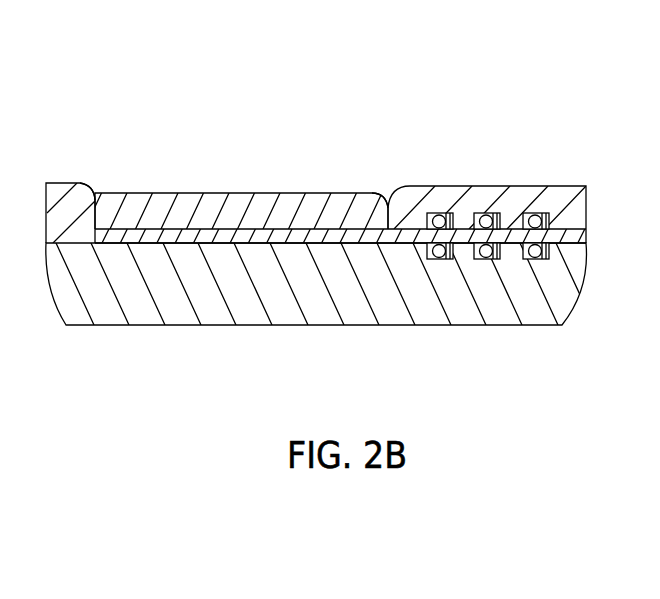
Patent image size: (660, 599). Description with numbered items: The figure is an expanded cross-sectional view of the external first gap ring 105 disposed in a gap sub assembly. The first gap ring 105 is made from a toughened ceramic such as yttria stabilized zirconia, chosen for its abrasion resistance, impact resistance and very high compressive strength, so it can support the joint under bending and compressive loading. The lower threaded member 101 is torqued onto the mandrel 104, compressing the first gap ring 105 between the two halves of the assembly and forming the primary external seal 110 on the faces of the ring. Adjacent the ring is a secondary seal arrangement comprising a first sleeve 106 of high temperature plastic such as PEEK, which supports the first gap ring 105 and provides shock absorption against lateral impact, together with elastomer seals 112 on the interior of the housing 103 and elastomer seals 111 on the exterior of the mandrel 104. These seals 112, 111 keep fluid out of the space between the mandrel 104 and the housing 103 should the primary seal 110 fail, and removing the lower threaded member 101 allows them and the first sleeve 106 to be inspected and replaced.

The lower threaded member 101 is at (62, 183).
The housing 103 is at (572, 203).
The mandrel 104 is at (100, 325).
The first gap ring 105 is at (222, 193).
The first sleeve 106 is at (300, 229).
The primary external seal 110 is at (115, 193).
The elastomer seal 111 is at (438, 259).
The elastomer seal 112 is at (441, 213).